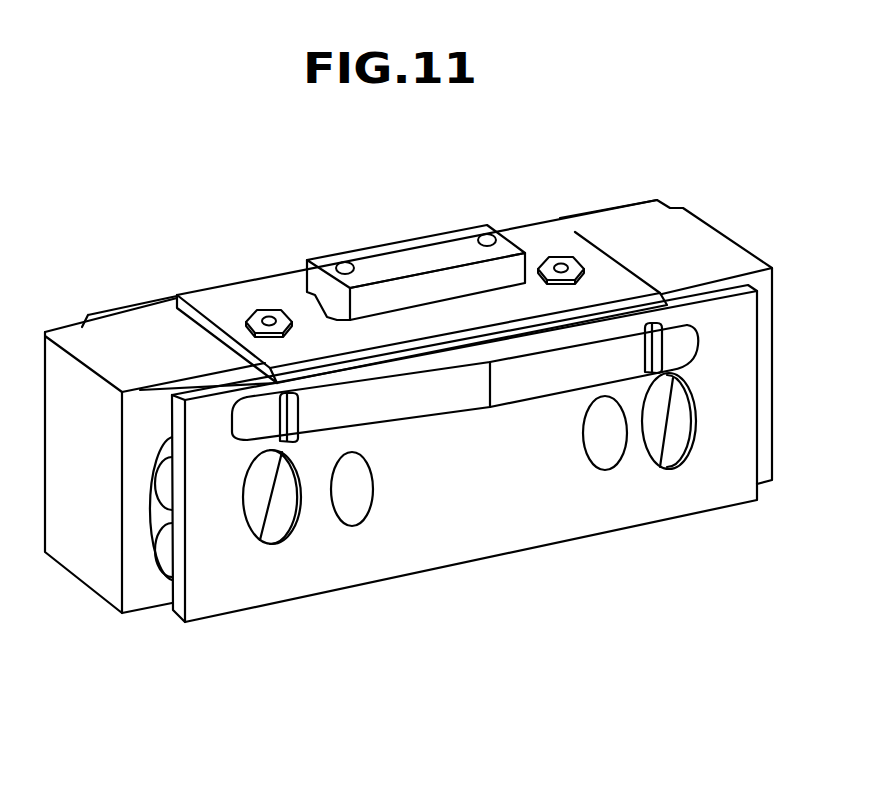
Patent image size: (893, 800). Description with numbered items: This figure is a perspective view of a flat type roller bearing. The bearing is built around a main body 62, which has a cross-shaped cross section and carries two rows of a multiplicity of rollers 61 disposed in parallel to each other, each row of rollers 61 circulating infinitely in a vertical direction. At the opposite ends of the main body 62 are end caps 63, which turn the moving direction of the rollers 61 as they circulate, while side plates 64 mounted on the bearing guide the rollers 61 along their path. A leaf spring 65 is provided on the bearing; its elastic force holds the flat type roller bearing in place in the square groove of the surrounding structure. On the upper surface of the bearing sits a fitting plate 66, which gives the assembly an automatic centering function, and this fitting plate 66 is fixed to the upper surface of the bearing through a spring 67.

The rollers 61 is at (168, 562).
The main body 62 is at (227, 307).
The end caps 63 is at (140, 433).
The side plates 64 is at (613, 498).
The leaf spring 65 is at (440, 400).
The fitting plate 66 is at (418, 255).
The spring 67 is at (345, 265).